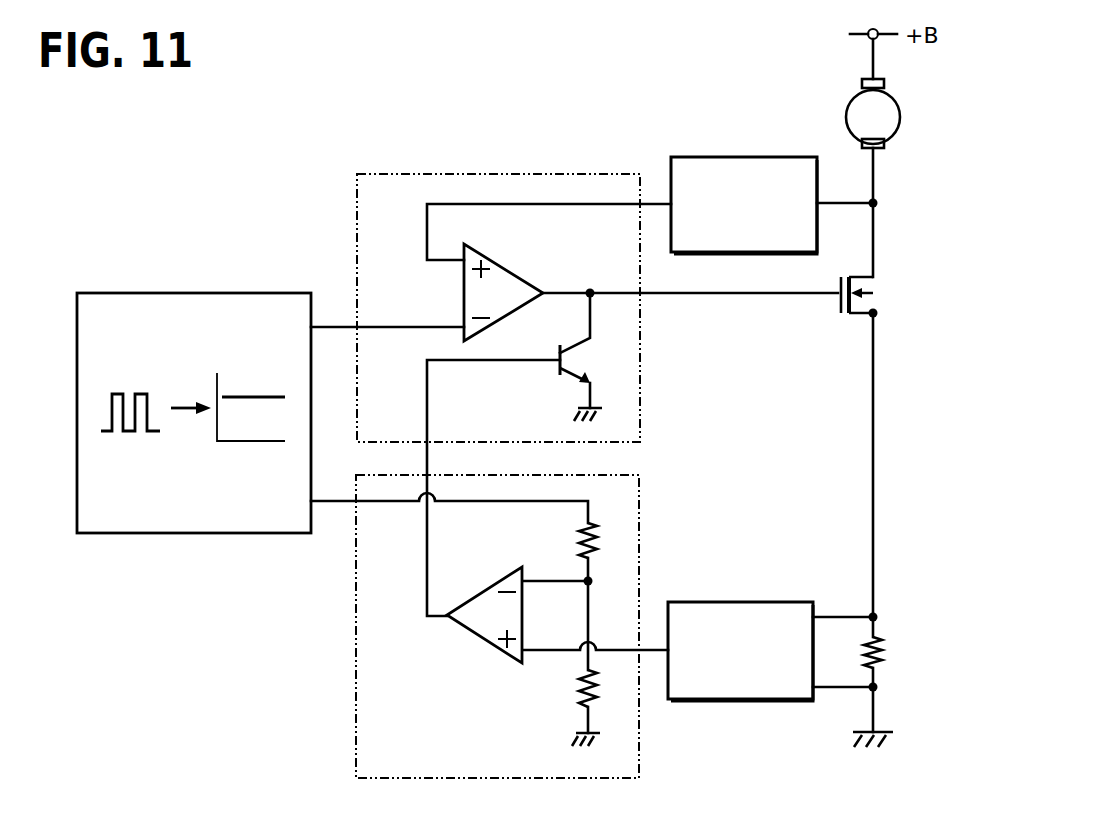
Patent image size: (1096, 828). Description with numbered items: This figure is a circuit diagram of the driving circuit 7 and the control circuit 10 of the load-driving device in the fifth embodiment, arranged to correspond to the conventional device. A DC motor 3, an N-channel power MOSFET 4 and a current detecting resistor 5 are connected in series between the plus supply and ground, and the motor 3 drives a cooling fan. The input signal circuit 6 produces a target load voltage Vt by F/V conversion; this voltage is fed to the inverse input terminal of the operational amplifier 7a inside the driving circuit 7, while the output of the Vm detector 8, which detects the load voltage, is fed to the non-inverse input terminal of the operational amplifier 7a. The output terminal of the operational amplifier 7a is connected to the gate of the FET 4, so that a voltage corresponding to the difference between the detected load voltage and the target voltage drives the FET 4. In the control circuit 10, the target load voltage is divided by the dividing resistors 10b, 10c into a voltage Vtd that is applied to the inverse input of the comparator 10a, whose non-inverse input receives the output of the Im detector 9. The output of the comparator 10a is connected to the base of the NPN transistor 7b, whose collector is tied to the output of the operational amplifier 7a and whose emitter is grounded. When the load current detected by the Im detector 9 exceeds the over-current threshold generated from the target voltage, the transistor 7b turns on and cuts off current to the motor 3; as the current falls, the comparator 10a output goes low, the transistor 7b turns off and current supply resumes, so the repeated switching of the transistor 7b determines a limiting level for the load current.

The DC motor 3 is at (900, 116).
The N-channel power MOSFET 4 is at (872, 287).
The current detecting resistor 5 is at (881, 652).
The input signal circuit 6 is at (203, 293).
The driving circuit 7 is at (404, 173).
The operational amplifier 7a is at (506, 262).
The NPN transistor 7b is at (566, 386).
The load voltage detector (Vm detector) 8 is at (757, 157).
The load current detector (Im detector) 9 is at (745, 602).
The control circuit 10 is at (355, 685).
The comparator 10a is at (479, 639).
The dividing resistor 10b is at (579, 538).
The dividing resistor 10c is at (576, 685).